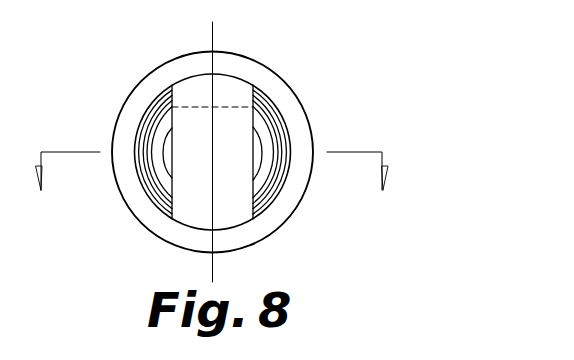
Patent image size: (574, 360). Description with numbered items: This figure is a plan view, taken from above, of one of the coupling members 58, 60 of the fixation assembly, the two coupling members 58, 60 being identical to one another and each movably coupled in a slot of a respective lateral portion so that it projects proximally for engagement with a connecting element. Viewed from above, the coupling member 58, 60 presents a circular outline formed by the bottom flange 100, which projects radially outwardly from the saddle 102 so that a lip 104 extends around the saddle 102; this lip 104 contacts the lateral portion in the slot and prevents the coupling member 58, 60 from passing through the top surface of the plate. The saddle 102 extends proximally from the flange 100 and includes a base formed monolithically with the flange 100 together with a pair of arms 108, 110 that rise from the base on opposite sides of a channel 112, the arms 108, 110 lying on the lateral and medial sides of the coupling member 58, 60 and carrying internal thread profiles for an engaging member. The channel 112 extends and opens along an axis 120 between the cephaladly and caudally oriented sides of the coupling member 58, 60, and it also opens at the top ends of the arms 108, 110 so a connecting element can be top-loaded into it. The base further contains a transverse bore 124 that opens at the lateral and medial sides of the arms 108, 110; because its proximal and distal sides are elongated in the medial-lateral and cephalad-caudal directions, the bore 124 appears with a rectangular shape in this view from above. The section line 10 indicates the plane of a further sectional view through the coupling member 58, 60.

The section line 10- 10 is at (213, 186).
The coupling member 58 is at (298, 56).
The coupling member 60 is at (298, 56).
The bottom flange 100 is at (117, 185).
The saddle 102 is at (153, 103).
The lip 104 is at (286, 208).
The arm 108 is at (136, 128).
The arm 110 is at (283, 133).
The channel 112 is at (222, 110).
The axis 120 is at (212, 42).
The transverse bore 124 is at (180, 197).